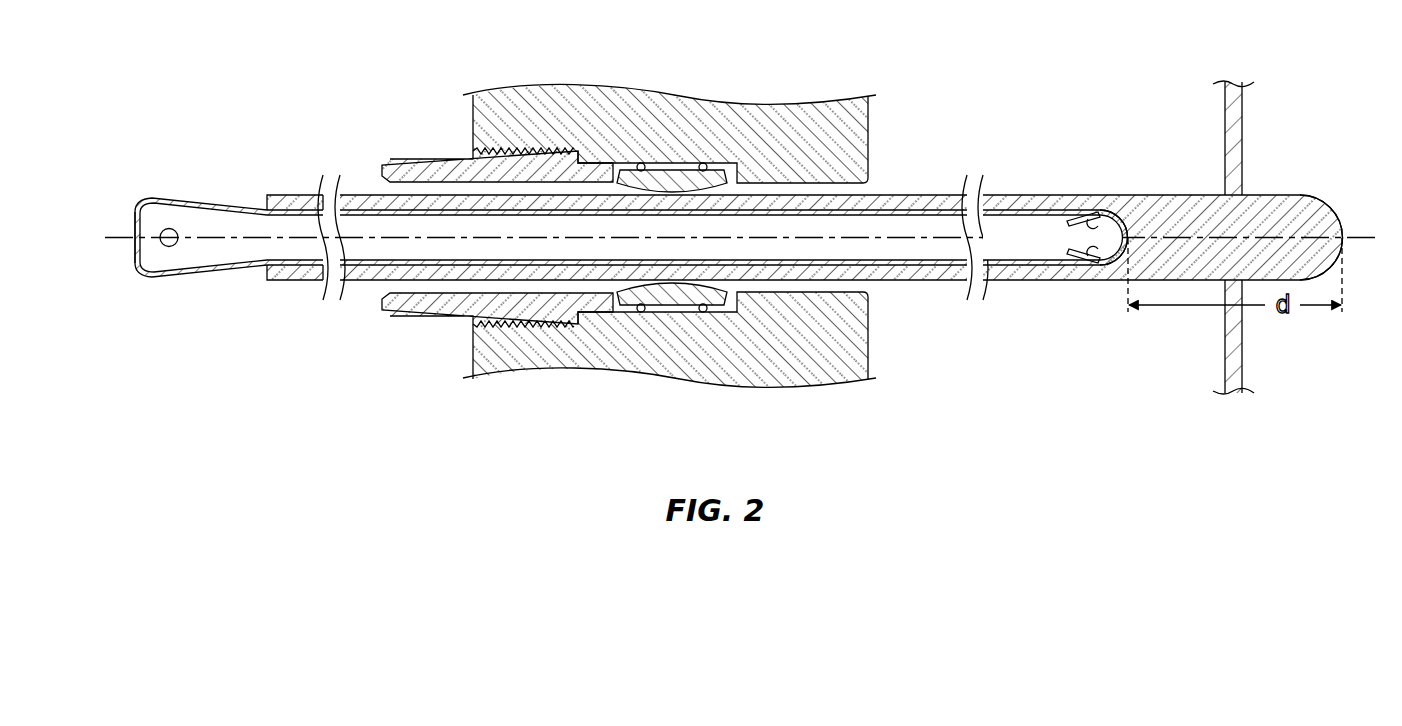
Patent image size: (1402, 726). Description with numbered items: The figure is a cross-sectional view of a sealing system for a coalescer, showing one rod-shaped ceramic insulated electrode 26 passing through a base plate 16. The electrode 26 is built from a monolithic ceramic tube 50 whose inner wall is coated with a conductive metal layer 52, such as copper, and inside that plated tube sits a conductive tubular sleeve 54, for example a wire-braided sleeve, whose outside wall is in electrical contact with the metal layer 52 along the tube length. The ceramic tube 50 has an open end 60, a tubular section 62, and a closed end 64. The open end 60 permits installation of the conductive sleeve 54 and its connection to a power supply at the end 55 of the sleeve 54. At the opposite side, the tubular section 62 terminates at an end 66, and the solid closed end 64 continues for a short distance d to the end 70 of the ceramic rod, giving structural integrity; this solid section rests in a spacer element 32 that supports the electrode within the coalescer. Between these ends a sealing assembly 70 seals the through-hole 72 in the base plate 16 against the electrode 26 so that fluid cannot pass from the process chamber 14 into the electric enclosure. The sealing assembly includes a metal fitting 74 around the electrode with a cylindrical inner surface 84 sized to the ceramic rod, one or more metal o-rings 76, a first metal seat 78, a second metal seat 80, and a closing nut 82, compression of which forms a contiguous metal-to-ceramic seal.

The process chamber 14 is at (1055, 51).
The base plate 16 is at (810, 104).
The rod-shaped ceramic insulated electrode 26 is at (372, 293).
The spacer element 32 is at (1243, 118).
The monolithic ceramic tube 50 is at (1012, 205).
The conductive metal layer 52 is at (1053, 212).
The conductive tubular sleeve 54 is at (183, 200).
The end of conductive sleeve 55 is at (133, 226).
The open end 60 is at (291, 282).
The tubular section 62 is at (918, 291).
The closed end 64 is at (1317, 188).
The end of tubular section 66 is at (1134, 237).
The sealing assembly 70 is at (366, 139).
The through-hole 72 is at (882, 186).
The metal fitting 74 is at (672, 288).
The metal o-ring 76 is at (610, 173).
The first metal seat 78 is at (1140, 206).
The second metal seat 80 is at (722, 308).
The closing nut 82 is at (410, 160).
The cylindrical inner surface 84 is at (672, 188).